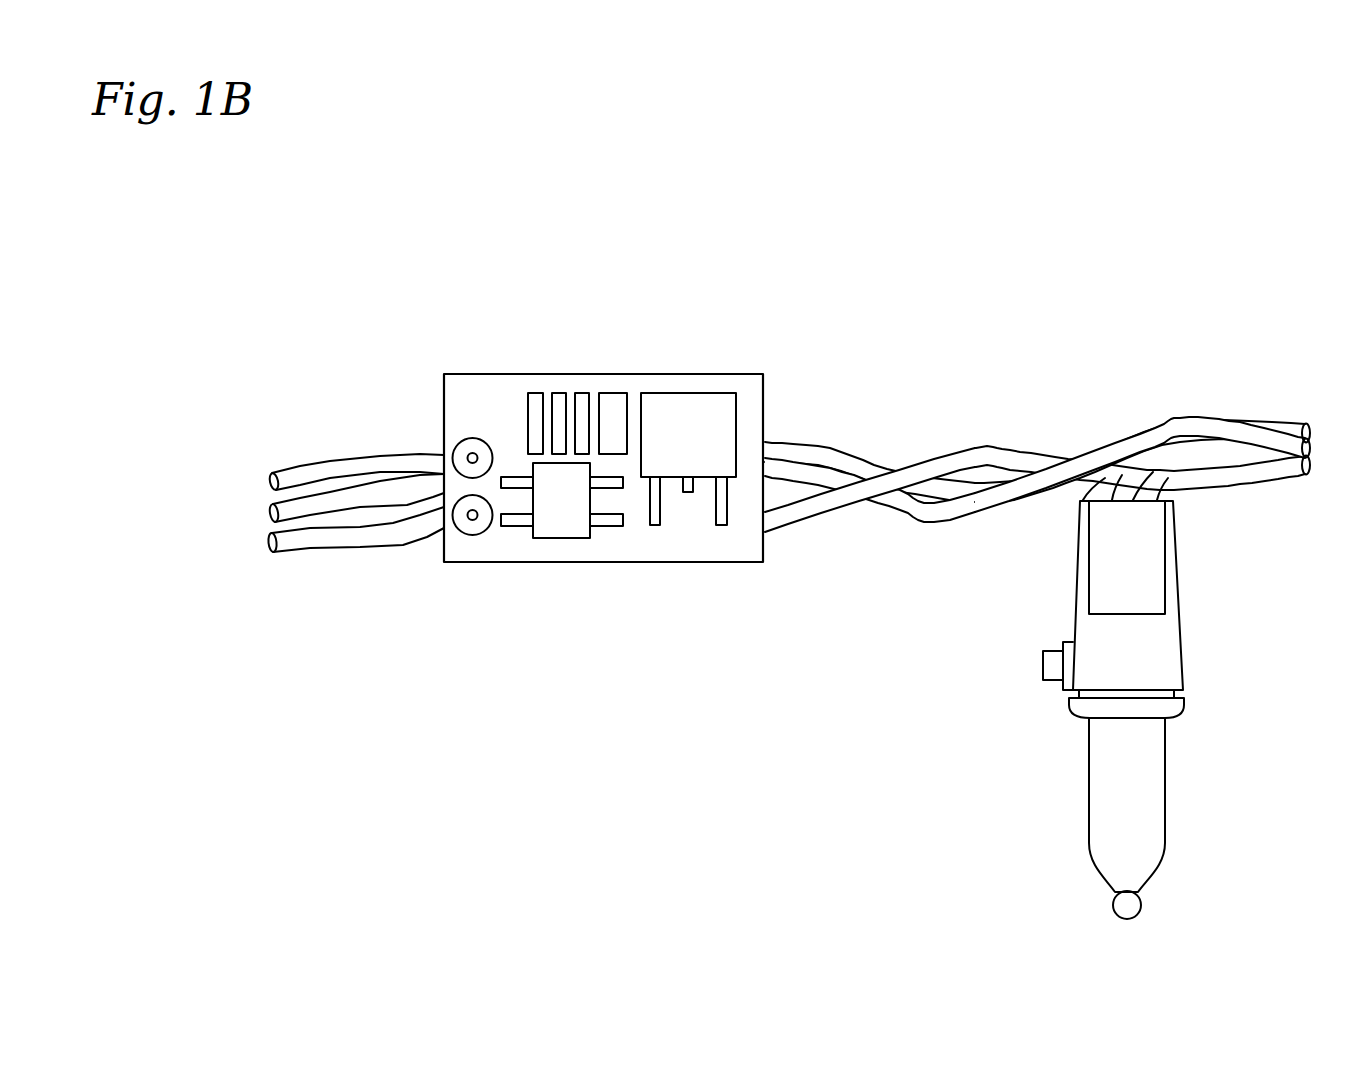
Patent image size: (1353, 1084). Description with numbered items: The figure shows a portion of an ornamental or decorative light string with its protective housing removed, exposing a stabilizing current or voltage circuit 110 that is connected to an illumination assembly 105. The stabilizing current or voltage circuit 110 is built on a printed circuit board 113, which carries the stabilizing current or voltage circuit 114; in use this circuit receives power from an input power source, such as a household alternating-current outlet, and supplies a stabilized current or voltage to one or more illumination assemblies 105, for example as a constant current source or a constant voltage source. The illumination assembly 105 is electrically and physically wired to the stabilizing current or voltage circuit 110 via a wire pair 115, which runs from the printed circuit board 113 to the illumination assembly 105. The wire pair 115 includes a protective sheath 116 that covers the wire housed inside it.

The illumination assembly 105 is at (1180, 628).
The stabilizing current or voltage circuit 110 is at (601, 407).
The printed circuit board 113 is at (497, 373).
The stabilizing current or voltage circuit 114 is at (688, 393).
The wire pair 115 is at (957, 515).
The protective sheath 116 is at (1037, 489).